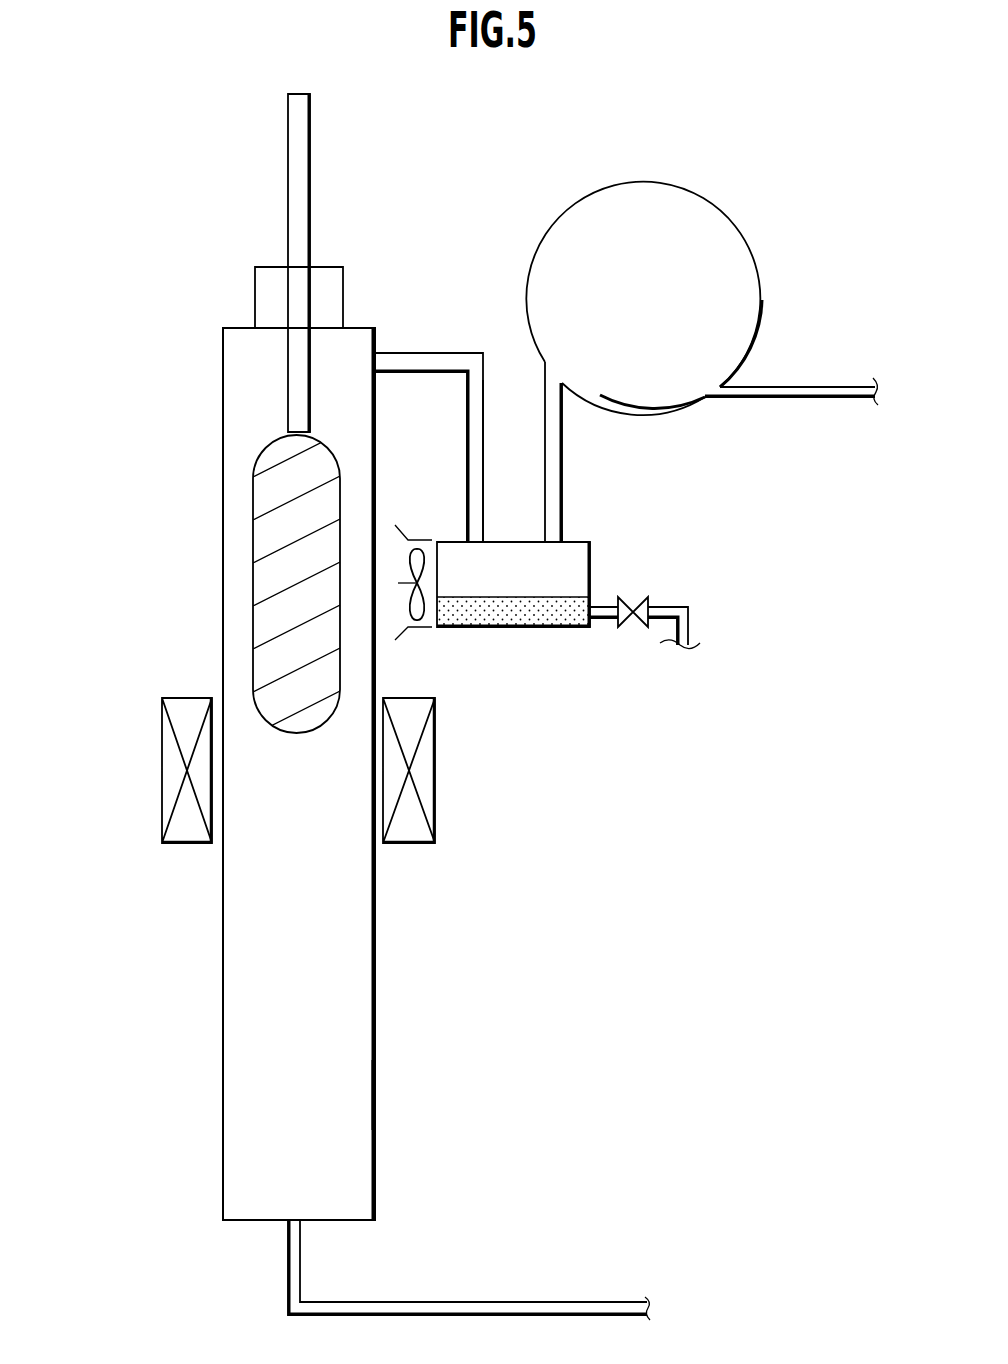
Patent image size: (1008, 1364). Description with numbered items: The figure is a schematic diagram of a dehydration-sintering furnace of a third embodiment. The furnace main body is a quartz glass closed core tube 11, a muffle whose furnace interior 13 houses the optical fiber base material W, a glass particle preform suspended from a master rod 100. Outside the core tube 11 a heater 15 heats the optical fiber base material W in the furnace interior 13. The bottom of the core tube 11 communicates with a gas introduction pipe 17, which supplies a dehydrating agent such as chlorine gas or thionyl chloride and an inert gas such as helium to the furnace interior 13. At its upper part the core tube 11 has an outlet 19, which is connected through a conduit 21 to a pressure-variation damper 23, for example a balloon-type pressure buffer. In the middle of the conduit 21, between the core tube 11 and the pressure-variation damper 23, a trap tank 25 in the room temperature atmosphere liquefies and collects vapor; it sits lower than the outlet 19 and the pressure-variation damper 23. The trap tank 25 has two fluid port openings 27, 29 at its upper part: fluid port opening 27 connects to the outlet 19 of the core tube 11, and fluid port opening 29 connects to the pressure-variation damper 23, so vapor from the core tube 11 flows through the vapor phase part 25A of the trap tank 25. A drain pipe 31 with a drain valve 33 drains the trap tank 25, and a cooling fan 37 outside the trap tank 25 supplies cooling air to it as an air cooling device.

The core tube 11 is at (376, 987).
The furnace interior 13 is at (363, 1092).
The heater 15 is at (427, 775).
The gas introduction pipe 17 is at (537, 1308).
The outlet 19 is at (373, 363).
The conduit 21 is at (470, 418).
The pressure-variation damper 23 is at (735, 222).
The trap tank 25 is at (598, 558).
The vapor phase part 25A is at (560, 577).
The fluid port opening 27 is at (475, 542).
The fluid port opening 29 is at (555, 540).
The drain pipe 31 is at (673, 607).
The drain valve 33 is at (632, 600).
The cooling fan 37 is at (418, 550).
The master rod 100 is at (300, 202).
The optical fiber base material W is at (280, 587).